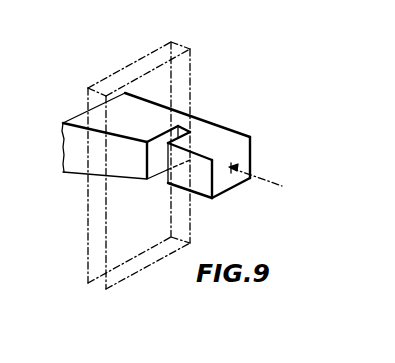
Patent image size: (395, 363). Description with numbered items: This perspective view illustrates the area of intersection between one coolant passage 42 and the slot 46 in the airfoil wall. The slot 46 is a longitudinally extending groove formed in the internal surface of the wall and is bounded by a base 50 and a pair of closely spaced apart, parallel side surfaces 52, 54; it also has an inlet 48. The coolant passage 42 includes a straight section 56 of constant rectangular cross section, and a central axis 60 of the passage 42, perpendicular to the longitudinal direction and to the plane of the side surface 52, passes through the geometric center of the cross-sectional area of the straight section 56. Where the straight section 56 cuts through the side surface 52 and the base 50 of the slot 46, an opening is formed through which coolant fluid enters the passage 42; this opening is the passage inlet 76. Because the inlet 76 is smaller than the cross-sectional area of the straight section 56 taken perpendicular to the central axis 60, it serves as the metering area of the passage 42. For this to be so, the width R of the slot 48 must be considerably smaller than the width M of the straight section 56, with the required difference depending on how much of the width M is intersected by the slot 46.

The coolant passage 42 is at (177, 161).
The slot 46 is at (160, 54).
The inlet 48 is at (99, 227).
The base 50 is at (132, 155).
The side surface 52 is at (84, 183).
The side surface 54 is at (109, 178).
The straight section 56 is at (187, 110).
The central axis 60 is at (262, 172).
The passage inlet 76 is at (167, 171).
The width of the slot R is at (82, 107).
The width of the straight section M is at (195, 153).